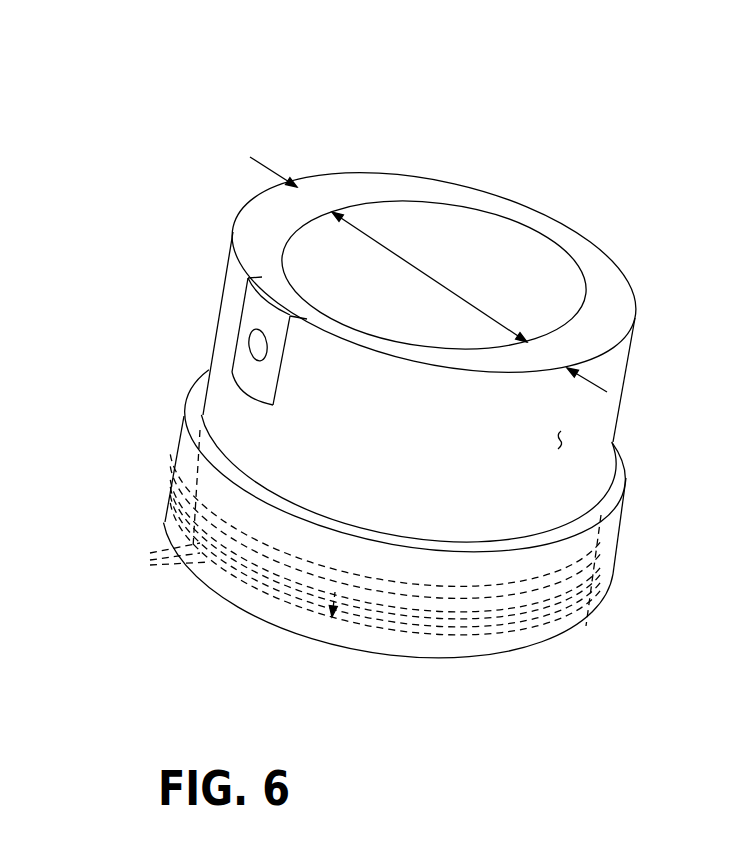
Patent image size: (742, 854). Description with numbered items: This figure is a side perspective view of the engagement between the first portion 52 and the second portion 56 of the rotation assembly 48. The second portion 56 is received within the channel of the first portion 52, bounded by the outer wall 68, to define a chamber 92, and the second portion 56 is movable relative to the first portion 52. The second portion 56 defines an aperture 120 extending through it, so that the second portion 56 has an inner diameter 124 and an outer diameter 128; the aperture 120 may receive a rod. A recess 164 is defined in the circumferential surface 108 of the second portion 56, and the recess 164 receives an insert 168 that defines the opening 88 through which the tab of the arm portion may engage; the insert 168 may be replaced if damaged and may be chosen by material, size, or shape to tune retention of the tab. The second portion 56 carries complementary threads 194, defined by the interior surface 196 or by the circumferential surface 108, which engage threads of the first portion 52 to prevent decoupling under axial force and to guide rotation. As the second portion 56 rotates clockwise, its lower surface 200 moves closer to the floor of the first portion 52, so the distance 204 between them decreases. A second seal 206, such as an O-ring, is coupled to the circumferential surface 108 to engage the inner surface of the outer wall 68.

The rotation assembly 48 is at (603, 163).
The first portion 52 is at (613, 593).
The second portion 56 is at (636, 330).
The outer wall 68 is at (188, 393).
The opening 88 is at (249, 343).
The chamber 92 is at (478, 630).
The circumferential surface 108 is at (560, 438).
The aperture 120 is at (507, 224).
The inner diameter 124 is at (400, 257).
The outer diameter 128 is at (270, 170).
The recess 164 is at (235, 237).
The insert 168 is at (281, 404).
The complementary threads 194 is at (142, 563).
The interior surface 196 is at (537, 283).
The lower surface 200 is at (523, 600).
The distance 204 is at (322, 648).
The second seal 206 is at (563, 600).